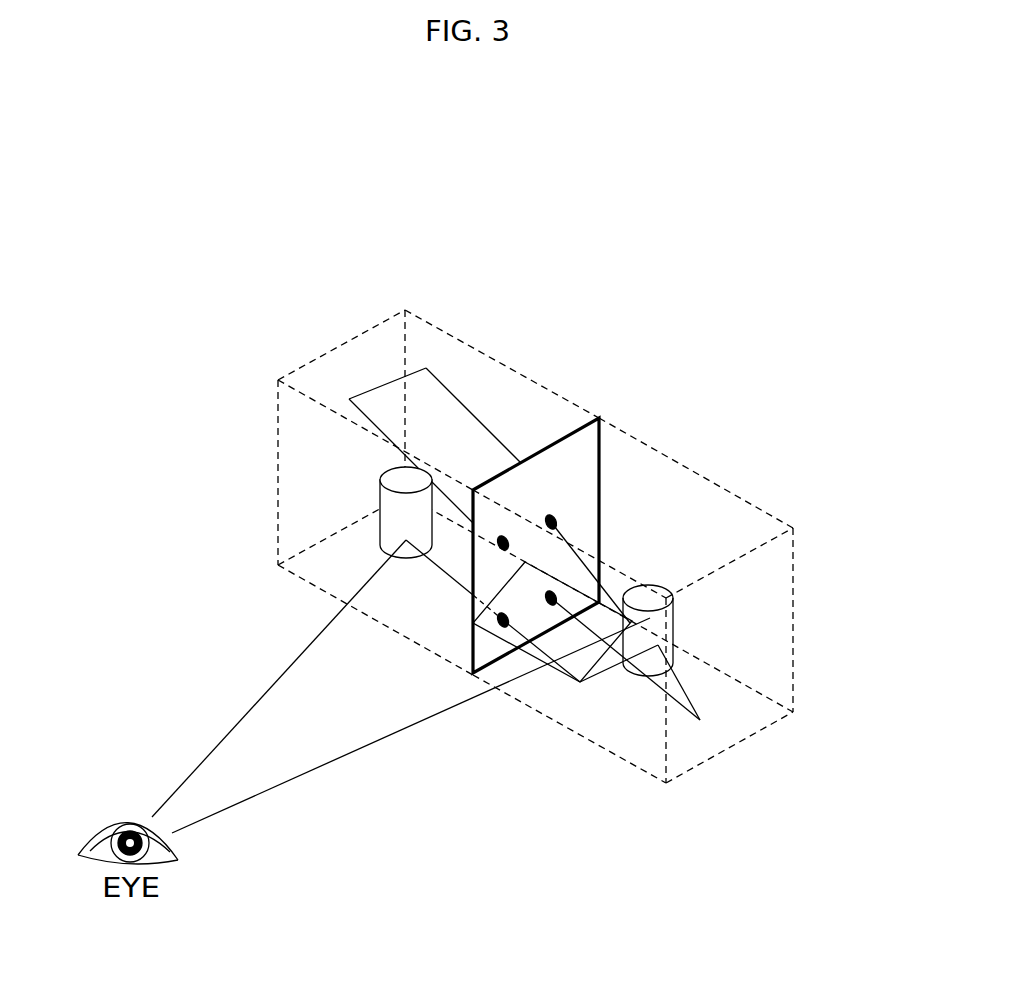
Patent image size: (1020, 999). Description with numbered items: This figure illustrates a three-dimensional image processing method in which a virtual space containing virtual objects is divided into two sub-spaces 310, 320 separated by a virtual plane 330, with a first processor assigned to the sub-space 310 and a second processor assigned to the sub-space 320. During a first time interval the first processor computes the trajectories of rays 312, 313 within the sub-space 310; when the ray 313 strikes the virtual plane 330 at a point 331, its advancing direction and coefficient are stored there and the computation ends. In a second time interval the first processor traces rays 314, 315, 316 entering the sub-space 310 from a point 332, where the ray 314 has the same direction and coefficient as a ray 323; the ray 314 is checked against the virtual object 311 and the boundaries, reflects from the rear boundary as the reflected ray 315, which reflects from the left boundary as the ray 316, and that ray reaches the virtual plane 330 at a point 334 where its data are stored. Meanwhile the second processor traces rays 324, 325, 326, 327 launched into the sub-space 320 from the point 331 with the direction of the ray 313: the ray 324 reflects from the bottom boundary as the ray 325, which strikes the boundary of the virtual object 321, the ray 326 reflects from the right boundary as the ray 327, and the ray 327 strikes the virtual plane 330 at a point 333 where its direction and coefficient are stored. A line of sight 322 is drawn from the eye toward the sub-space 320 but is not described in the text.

The sub-space 310 is at (318, 352).
The virtual object 311 is at (393, 503).
The ray 312 is at (210, 754).
The ray 313 is at (468, 560).
The ray 314 is at (447, 392).
The reflected ray 315 is at (382, 386).
The ray 316 is at (365, 420).
The sub-space 320 is at (798, 554).
The virtual object 321 is at (674, 625).
The line of sight to camera 322 is at (281, 787).
The ray 323 is at (614, 590).
The ray 324 is at (560, 672).
The reflected ray 325 is at (603, 680).
The ray 326 is at (700, 714).
The reflected ray 327 is at (692, 716).
The virtual plane 330 is at (472, 563).
The point 331 is at (501, 620).
The point 332 is at (553, 518).
The point 333 is at (550, 600).
The point 334 is at (503, 540).